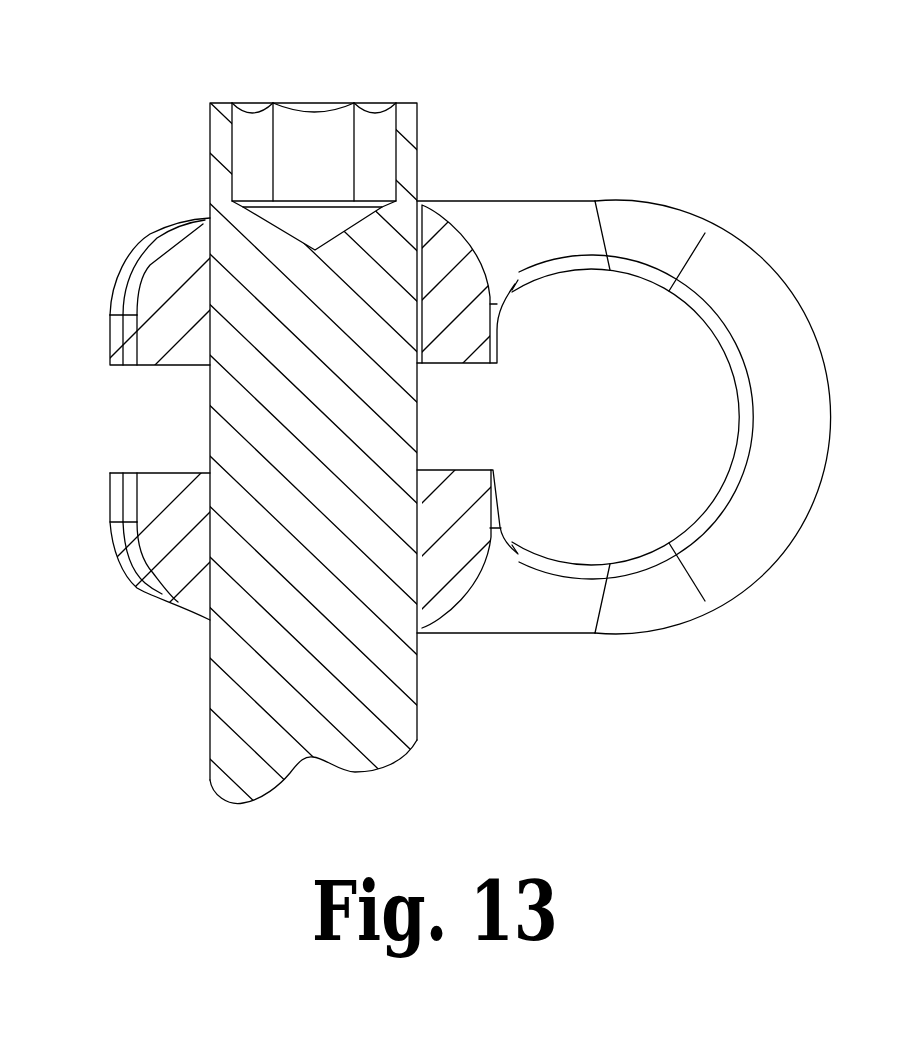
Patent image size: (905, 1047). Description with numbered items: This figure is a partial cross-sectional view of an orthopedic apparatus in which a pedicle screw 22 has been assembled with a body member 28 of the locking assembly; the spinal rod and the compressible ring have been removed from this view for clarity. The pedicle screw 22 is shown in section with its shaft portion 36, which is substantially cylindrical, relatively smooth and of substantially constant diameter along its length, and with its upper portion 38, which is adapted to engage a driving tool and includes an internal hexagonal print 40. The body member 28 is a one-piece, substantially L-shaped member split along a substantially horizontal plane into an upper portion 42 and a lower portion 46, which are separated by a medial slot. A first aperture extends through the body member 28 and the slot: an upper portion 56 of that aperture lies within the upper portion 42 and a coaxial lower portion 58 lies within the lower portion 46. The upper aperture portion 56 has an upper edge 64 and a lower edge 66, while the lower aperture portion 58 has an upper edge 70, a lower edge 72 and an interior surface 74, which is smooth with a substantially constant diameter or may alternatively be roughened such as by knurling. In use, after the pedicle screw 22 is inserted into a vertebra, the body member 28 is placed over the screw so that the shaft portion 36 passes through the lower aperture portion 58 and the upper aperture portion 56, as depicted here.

The pedicle screw 22 is at (208, 138).
The body member 28 is at (750, 273).
The shaft portion 36 is at (210, 692).
The upper portion 38 is at (400, 101).
The internal hexagonal print 40 is at (317, 101).
The upper portion 42 is at (124, 306).
The lower portion 46 is at (127, 540).
The upper portion of aperture 56 is at (207, 218).
The lower portion of aperture 58 is at (420, 627).
The upper edge 64 is at (420, 202).
The lower edge 66 is at (205, 367).
The upper edge 70 is at (206, 470).
The lower edge 72 is at (207, 620).
The interior surface 74 is at (420, 518).